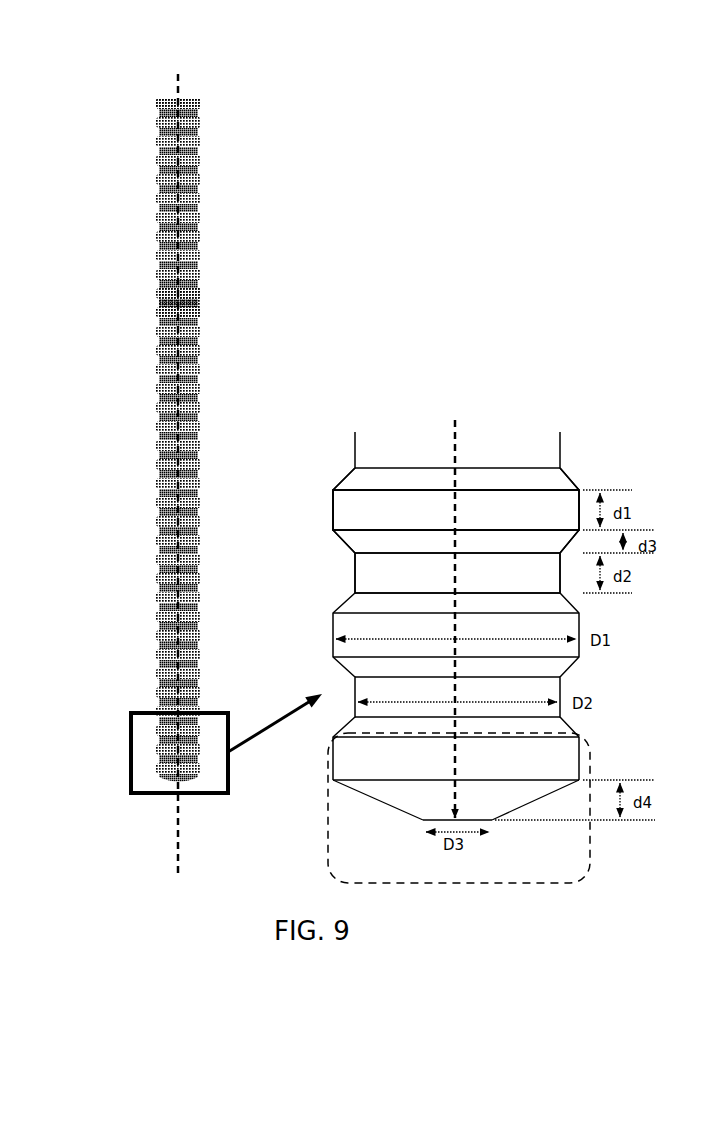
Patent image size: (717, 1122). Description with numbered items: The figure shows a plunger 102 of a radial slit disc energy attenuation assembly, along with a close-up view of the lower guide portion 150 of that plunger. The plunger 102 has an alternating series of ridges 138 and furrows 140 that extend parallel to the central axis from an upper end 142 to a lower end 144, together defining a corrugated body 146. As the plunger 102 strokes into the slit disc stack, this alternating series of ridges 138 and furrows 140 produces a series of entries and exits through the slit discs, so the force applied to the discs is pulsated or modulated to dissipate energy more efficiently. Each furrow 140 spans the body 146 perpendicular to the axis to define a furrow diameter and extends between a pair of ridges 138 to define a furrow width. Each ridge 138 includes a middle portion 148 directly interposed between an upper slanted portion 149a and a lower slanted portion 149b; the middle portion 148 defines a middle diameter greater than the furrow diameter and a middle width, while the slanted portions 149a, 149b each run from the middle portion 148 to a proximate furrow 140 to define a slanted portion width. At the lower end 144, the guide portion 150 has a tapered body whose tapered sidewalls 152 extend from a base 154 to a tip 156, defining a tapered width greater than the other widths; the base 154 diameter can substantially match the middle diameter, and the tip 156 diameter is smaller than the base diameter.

The plunger 102 is at (280, 199).
The ridge 138 is at (160, 100).
The furrow 140 is at (156, 112).
The upper end 142 is at (203, 104).
The lower end 144 is at (153, 777).
The corrugated body 146 is at (199, 316).
The middle portion 148 is at (441, 521).
The upper slanted portion 149a is at (358, 480).
The lower slanted portion 149b is at (353, 543).
The guide portion 150 is at (328, 825).
The tapered sidewalls 152 is at (405, 812).
The base 154 is at (372, 782).
The tip 156 is at (492, 822).